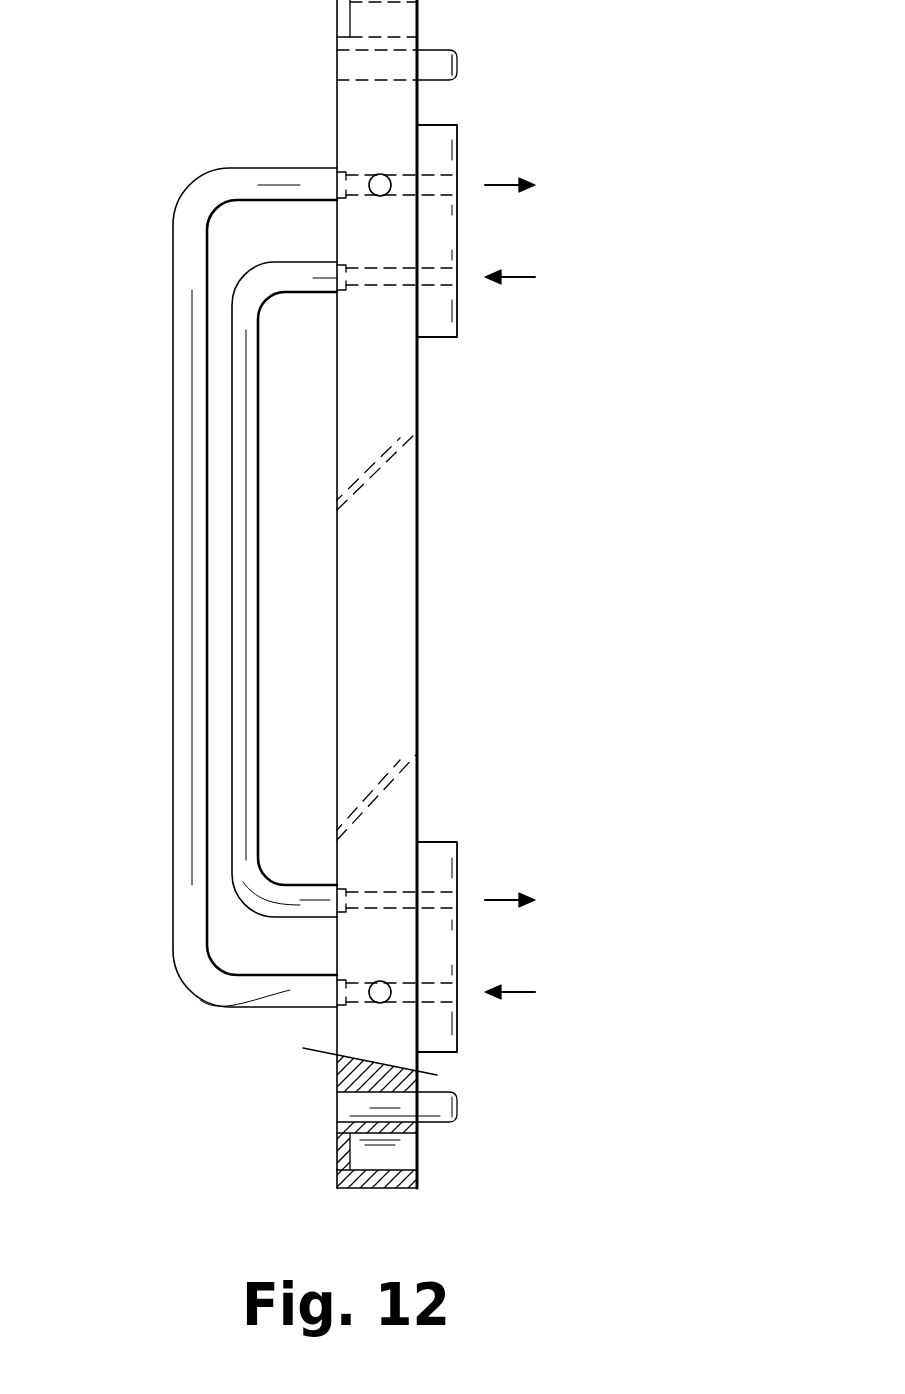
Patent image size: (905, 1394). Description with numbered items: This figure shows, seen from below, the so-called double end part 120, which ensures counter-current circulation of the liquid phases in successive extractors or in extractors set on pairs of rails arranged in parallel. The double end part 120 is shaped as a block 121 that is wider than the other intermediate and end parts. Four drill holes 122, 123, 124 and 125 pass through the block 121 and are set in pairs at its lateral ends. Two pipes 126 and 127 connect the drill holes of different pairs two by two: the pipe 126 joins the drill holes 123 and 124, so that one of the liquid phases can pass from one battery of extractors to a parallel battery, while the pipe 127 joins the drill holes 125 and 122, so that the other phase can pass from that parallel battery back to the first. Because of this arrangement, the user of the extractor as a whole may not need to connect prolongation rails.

The double end part 120 is at (315, 600).
The block 121 is at (389, 607).
The drill hole 122 is at (458, 177).
The drill hole 123 is at (458, 292).
The drill hole 124 is at (458, 885).
The drill hole 125 is at (458, 1008).
The pipe 126 is at (237, 640).
The pipe 127 is at (187, 548).